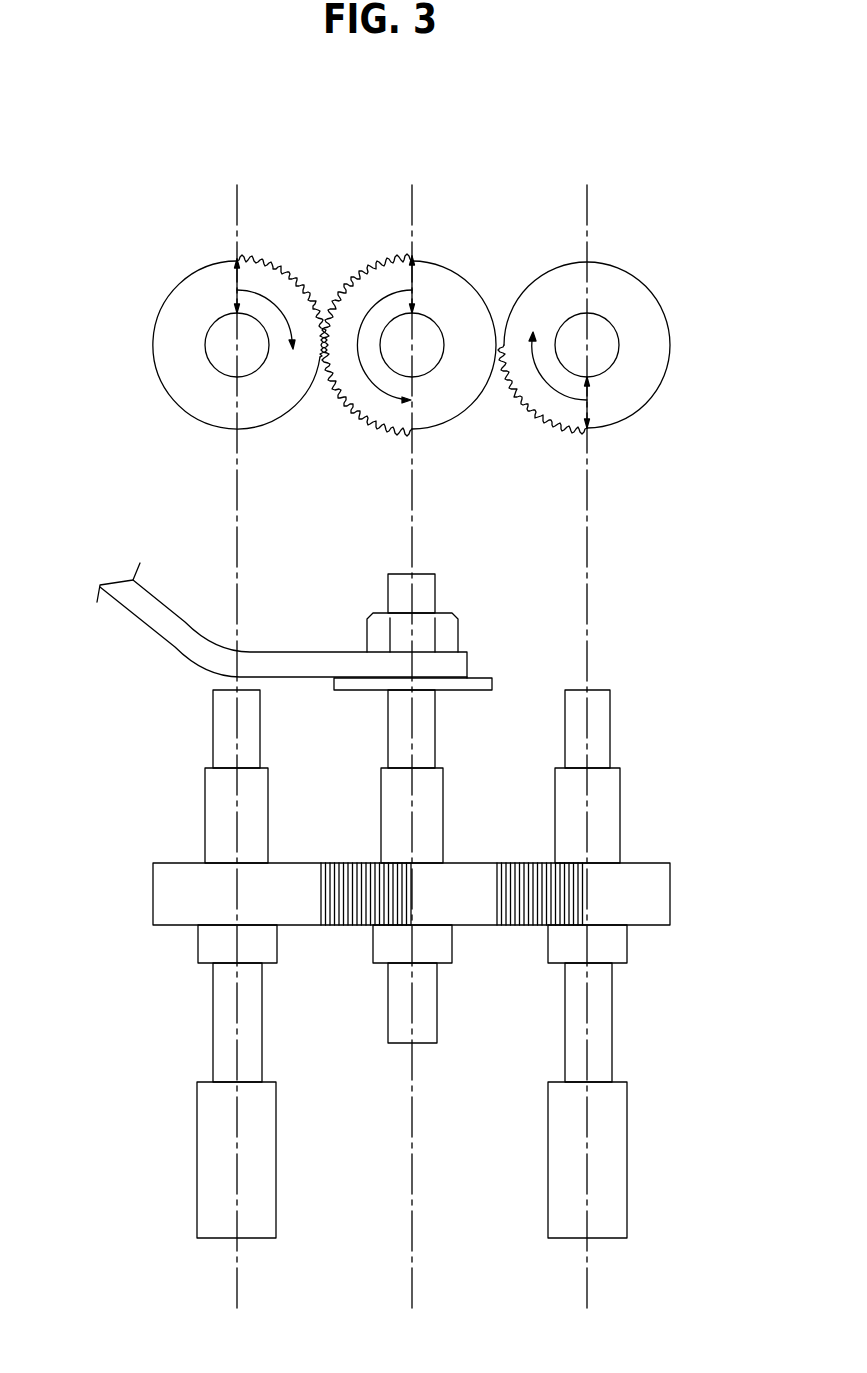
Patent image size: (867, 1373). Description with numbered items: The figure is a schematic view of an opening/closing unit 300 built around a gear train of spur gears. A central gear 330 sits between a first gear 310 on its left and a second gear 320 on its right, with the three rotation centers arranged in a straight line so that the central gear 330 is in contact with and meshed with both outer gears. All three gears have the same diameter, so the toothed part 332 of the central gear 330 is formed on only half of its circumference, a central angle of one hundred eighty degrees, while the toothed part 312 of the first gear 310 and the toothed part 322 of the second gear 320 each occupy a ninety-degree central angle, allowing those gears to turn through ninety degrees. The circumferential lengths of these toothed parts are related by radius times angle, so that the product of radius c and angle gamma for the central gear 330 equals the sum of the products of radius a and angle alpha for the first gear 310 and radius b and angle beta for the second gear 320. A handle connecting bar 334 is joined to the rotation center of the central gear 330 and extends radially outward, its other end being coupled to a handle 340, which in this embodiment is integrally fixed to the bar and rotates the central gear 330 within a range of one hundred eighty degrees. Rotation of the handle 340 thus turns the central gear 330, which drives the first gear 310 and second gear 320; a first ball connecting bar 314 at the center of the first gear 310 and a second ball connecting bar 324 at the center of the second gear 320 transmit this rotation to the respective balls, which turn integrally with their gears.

The opening/closing unit 300 is at (133, 163).
The first gear 310 is at (172, 308).
The toothed part of the first gear 312 is at (283, 266).
The first ball connecting bar 314 is at (223, 1030).
The second gear 320 is at (627, 284).
The toothed part of the second gear 322 is at (558, 428).
The second ball connecting bar 324 is at (602, 1027).
The central gear 330 is at (457, 284).
The toothed part of the central gear 332 is at (354, 413).
The handle connecting bar 334 is at (425, 730).
The handle 340 is at (137, 620).